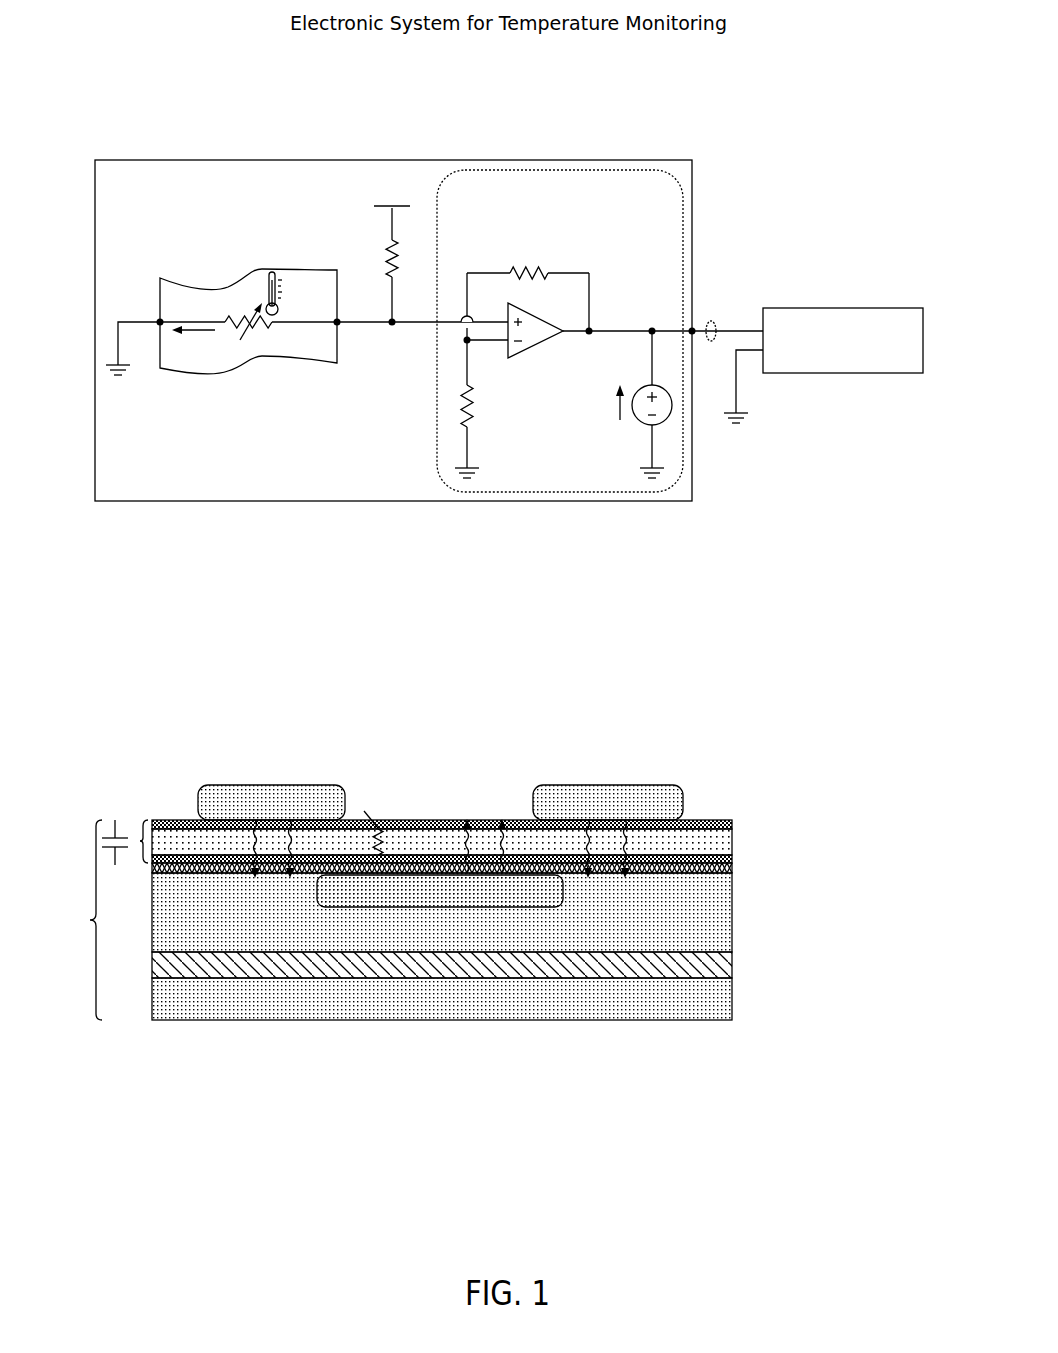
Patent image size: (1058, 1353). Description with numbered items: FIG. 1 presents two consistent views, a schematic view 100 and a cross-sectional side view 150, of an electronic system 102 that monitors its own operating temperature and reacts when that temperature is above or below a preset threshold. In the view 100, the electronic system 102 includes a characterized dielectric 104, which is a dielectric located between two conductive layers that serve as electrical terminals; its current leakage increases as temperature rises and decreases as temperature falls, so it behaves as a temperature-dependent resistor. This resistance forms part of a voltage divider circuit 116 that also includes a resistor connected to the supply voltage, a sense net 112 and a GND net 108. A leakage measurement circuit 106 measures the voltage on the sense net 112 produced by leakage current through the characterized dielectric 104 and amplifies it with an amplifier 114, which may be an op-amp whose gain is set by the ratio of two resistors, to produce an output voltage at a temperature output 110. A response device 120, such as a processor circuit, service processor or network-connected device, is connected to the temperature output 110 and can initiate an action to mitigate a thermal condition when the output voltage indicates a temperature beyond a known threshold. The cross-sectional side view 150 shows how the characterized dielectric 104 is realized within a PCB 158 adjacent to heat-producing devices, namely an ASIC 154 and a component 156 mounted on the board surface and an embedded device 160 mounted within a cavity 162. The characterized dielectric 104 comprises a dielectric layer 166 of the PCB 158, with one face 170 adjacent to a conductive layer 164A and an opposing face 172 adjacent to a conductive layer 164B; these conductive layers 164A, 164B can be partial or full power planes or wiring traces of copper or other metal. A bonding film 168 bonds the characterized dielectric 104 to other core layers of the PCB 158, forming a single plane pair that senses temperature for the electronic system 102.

The view 100 is at (102, 58).
The electronic system 102 is at (139, 489).
The characterized dielectric 104 is at (140, 841).
The leakage measurement circuit 106 is at (586, 197).
The GND net 108 is at (130, 320).
The temperature output 110 is at (711, 321).
The sense net 112 is at (428, 325).
The amplifier 114 is at (539, 344).
The voltage divider circuit 116 is at (197, 205).
The response device 120 is at (823, 365).
The cross-sectional side view 150 is at (102, 720).
The ASIC 154 is at (271, 831).
The component 156 is at (608, 831).
The PCB 158 is at (387, 920).
The embedded device 160 is at (371, 902).
The cavity 162 is at (565, 904).
The conductive layer 164A is at (726, 825).
The conductive layer 164B is at (722, 858).
The dielectric layer 166 is at (722, 841).
The bonding film 168 is at (722, 868).
The face 170 is at (412, 814).
The opposing face 172 is at (432, 848).